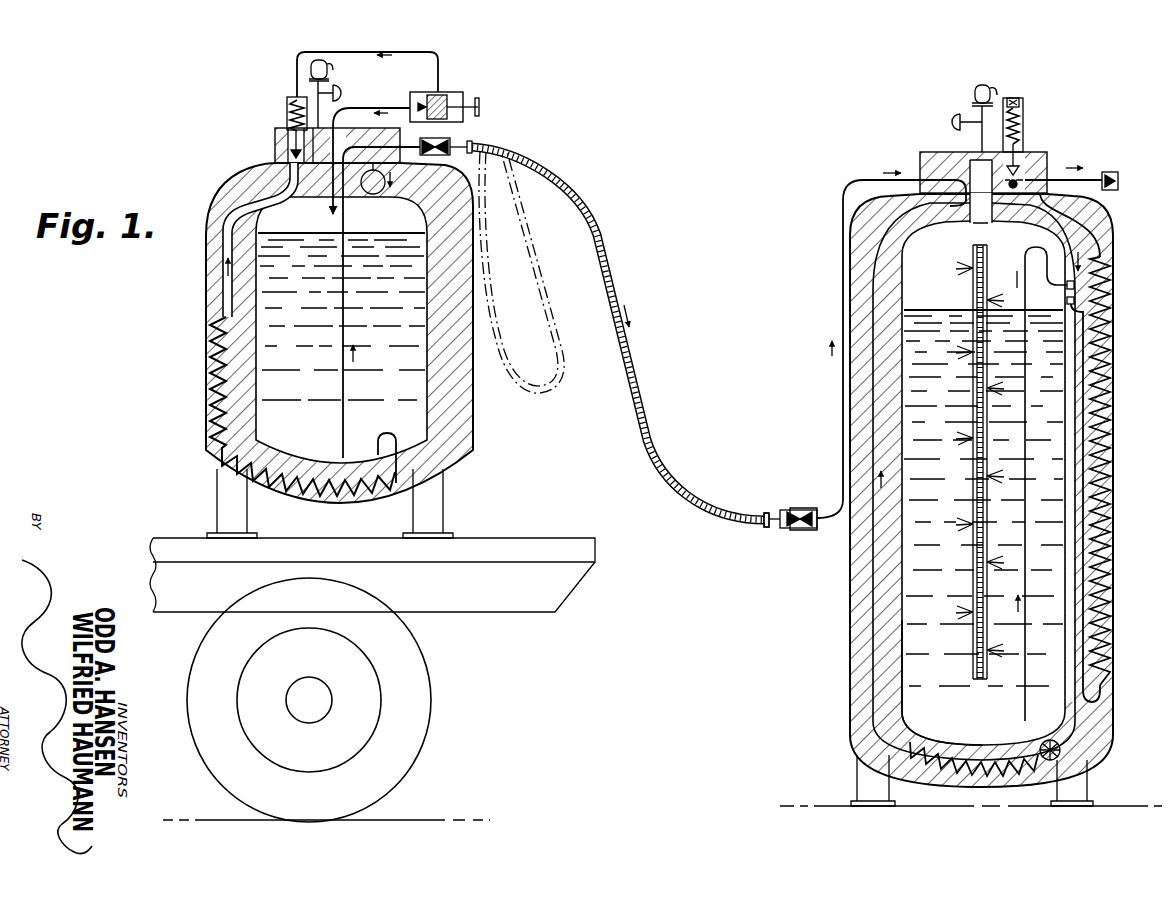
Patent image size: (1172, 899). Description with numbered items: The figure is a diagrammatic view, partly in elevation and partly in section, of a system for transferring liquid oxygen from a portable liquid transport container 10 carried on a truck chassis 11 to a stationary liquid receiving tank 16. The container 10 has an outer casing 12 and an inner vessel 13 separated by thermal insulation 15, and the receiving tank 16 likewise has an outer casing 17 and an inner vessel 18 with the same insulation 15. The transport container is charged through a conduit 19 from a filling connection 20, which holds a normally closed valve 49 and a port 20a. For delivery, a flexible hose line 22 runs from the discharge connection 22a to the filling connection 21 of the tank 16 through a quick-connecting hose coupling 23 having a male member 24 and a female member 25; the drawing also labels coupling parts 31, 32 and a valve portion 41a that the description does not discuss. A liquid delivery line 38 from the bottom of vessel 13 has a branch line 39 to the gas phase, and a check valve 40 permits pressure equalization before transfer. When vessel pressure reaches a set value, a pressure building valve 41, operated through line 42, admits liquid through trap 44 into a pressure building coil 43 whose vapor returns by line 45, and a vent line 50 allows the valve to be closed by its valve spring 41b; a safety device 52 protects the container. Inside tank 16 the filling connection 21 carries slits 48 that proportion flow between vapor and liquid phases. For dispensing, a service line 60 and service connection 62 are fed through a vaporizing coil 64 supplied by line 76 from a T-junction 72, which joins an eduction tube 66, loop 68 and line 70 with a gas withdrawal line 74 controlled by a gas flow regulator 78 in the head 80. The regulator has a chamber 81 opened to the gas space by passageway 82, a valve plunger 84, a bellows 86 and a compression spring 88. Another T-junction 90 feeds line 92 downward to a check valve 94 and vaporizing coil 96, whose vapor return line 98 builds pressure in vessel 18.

The portable liquid transport container 10 is at (203, 379).
The truck chassis 11 is at (548, 546).
The outer casing 12 is at (473, 404).
The inner vessel 13 is at (427, 432).
The thermal insulation 15 is at (445, 458).
The liquid receiving tank 16 is at (846, 621).
The outer casing 17 is at (850, 655).
The inner vessel 18 is at (876, 688).
The conduit 19 is at (386, 108).
The filling connection 20 is at (417, 91).
The port 20a is at (446, 95).
The filling connection 21 is at (842, 426).
The flexible hose line 22 is at (556, 385).
The discharge connection 22a is at (470, 136).
The quick-connecting hose coupling 23 is at (778, 537).
The male member 24 is at (812, 529).
The female member 25 is at (465, 84).
The coupling valve element 31 is at (806, 512).
The coupling valve element 32 is at (791, 512).
The liquid delivery line 38 is at (342, 424).
The branch line 39 is at (410, 160).
The check valve 40 is at (371, 194).
The pressure building valve 41 is at (288, 156).
The relief valve body 41a is at (277, 136).
The valve spring 41b is at (287, 106).
The line 42 is at (318, 165).
The pressure building coil 43 is at (216, 456).
The trap 44 is at (386, 435).
The line 45 is at (222, 287).
The slits 48 is at (974, 288).
The normally closed valve 49 is at (480, 106).
The vent line 50 is at (440, 55).
The safety device 52 is at (310, 70).
The service line 60 is at (1090, 172).
The service connection 62 is at (1119, 188).
The vaporizing coil 64 is at (1106, 262).
The eduction tube 66 is at (1024, 297).
The loop 68 is at (1035, 248).
The line 70 is at (1060, 287).
The T-junction 72 is at (1076, 285).
The gas withdrawal line 74 is at (1096, 240).
The line 76 is at (1100, 346).
The gas flow regulator 78 is at (1025, 93).
The head 80 is at (926, 163).
The chamber 81 is at (1024, 170).
The passageway 82 is at (985, 158).
The valve plunger 84 is at (1023, 154).
The bellows 86 is at (1021, 140).
The compression spring 88 is at (1022, 116).
The T-junction 90 is at (1080, 306).
The line 92 is at (1086, 378).
The check valve 94 is at (1060, 752).
The vaporizing coil 96 is at (1000, 755).
The vapor return line 98 is at (882, 708).